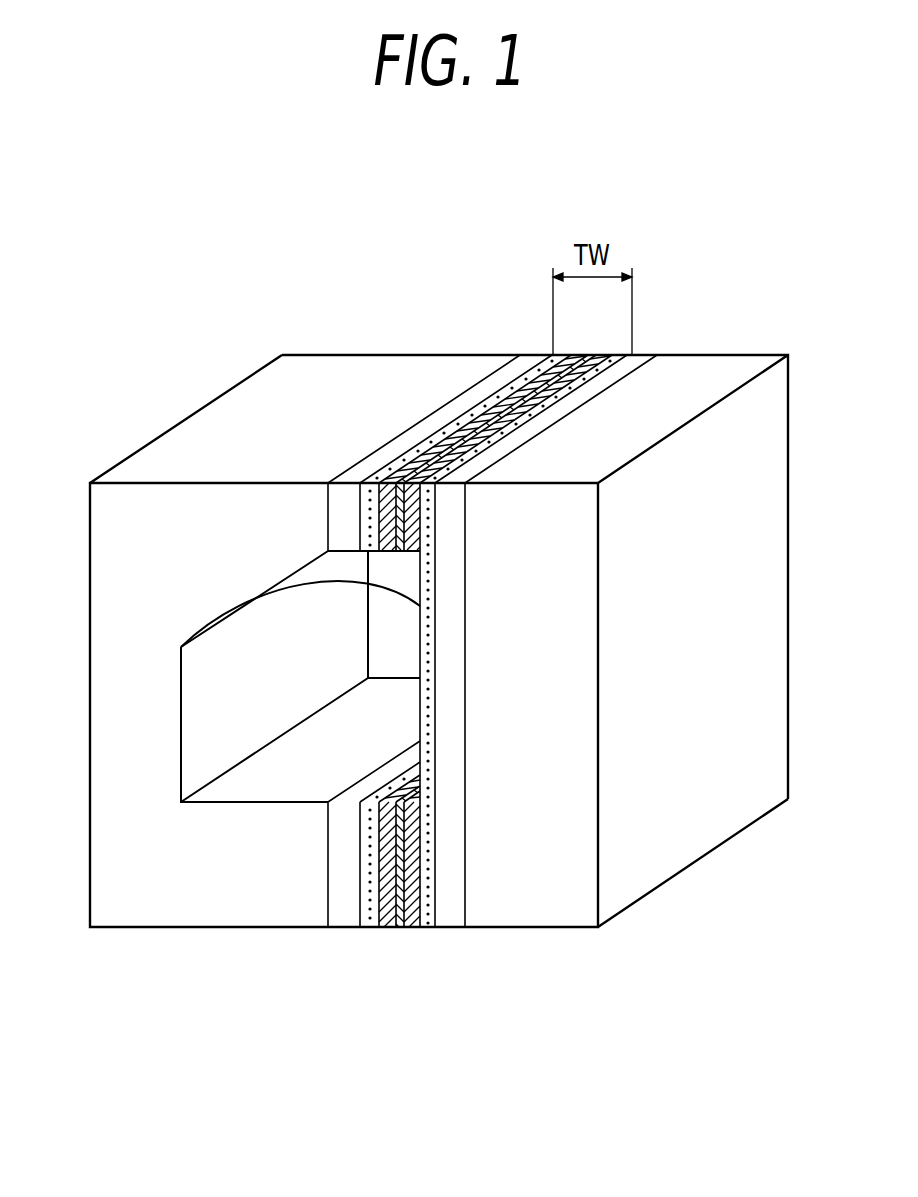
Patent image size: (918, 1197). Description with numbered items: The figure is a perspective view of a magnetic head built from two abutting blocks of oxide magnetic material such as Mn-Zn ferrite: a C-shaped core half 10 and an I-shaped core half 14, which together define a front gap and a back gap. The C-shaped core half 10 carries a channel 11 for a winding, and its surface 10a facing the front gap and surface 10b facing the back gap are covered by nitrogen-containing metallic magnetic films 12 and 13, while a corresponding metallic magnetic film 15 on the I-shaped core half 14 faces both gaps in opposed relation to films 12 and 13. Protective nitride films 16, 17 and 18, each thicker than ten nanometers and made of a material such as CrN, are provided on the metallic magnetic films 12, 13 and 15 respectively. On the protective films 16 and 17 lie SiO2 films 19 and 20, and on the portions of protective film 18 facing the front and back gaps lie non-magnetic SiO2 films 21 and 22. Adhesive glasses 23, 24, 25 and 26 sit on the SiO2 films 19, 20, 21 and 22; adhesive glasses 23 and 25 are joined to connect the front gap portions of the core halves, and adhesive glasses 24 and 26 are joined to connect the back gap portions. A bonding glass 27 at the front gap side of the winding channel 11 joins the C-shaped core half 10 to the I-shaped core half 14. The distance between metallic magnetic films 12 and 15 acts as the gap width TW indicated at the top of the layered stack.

The C-shaped core half 10 is at (428, 377).
The surface facing the front gap 10a is at (478, 383).
The surface facing the back gap 10b is at (325, 900).
The channel 11 is at (200, 708).
The metallic magnetic film 12 is at (530, 358).
The metallic magnetic film 13 is at (342, 915).
The I-shaped core half 14 is at (723, 378).
The metallic magnetic film 15 is at (640, 390).
The protective film 16 is at (560, 353).
The protective film 17 is at (368, 920).
The protective film 18 is at (628, 386).
The SiO2 film 19 is at (578, 356).
The SiO2 film 20 is at (392, 925).
The SiO2 film 21 is at (616, 381).
The SiO2 film 22 is at (425, 927).
The adhesive glass 23 is at (592, 366).
The adhesive glass 24 is at (397, 927).
The adhesive glass 25 is at (604, 374).
The adhesive glass 26 is at (407, 927).
The bonding glass 27 is at (343, 572).